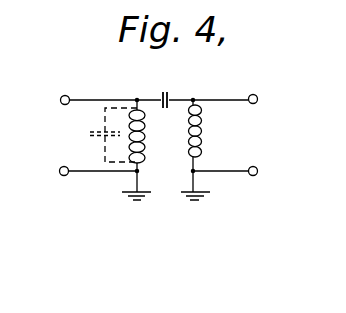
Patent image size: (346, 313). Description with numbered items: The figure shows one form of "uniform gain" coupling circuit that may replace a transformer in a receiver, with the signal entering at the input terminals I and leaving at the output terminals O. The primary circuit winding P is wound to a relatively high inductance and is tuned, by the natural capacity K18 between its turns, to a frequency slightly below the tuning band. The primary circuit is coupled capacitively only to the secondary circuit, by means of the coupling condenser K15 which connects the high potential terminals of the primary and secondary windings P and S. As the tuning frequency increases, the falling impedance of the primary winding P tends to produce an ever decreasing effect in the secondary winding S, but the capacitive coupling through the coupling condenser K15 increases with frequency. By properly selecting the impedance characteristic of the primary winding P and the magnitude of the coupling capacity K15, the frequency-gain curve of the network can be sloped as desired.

The input terminals I is at (63, 106).
The output terminals O is at (253, 104).
The coupling condenser K15 is at (162, 109).
The natural capacity K18 is at (104, 135).
The primary circuit winding P is at (132, 150).
The secondary winding S is at (199, 150).